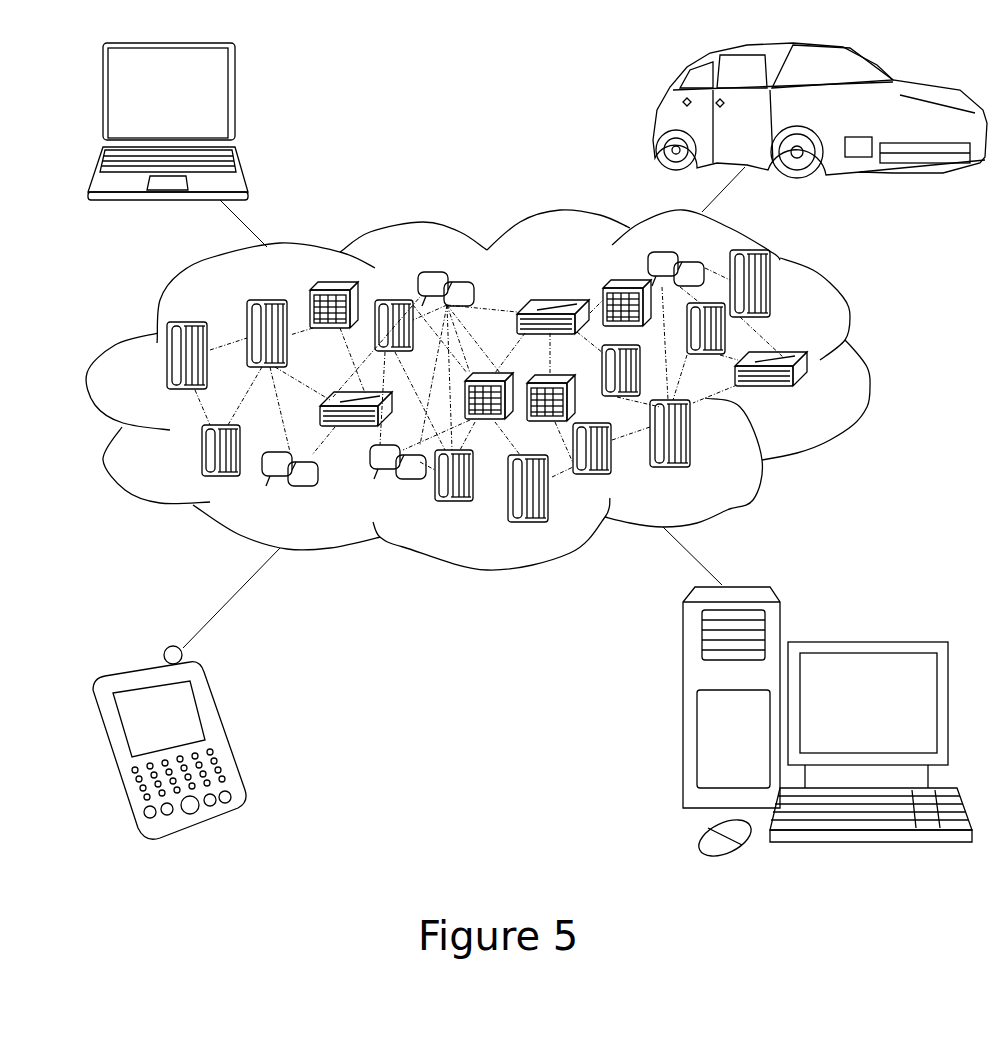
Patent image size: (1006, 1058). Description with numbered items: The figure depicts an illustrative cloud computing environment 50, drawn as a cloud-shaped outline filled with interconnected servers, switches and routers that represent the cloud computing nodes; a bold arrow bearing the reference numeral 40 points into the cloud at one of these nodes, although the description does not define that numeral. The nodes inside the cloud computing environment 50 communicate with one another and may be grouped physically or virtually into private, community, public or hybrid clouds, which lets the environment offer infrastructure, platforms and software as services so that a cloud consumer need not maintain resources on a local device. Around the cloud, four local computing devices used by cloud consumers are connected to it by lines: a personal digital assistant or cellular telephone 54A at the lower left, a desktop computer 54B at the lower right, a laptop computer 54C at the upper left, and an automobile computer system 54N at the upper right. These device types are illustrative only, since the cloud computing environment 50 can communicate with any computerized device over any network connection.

The cloud computing nodes 40 is at (822, 393).
The cloud computing environment 50 is at (509, 390).
The personal digital assistant or cellular telephone 54A is at (223, 733).
The desktop computer 54B is at (863, 642).
The laptop computer 54C is at (235, 102).
The automobile computer system 54N is at (657, 117).